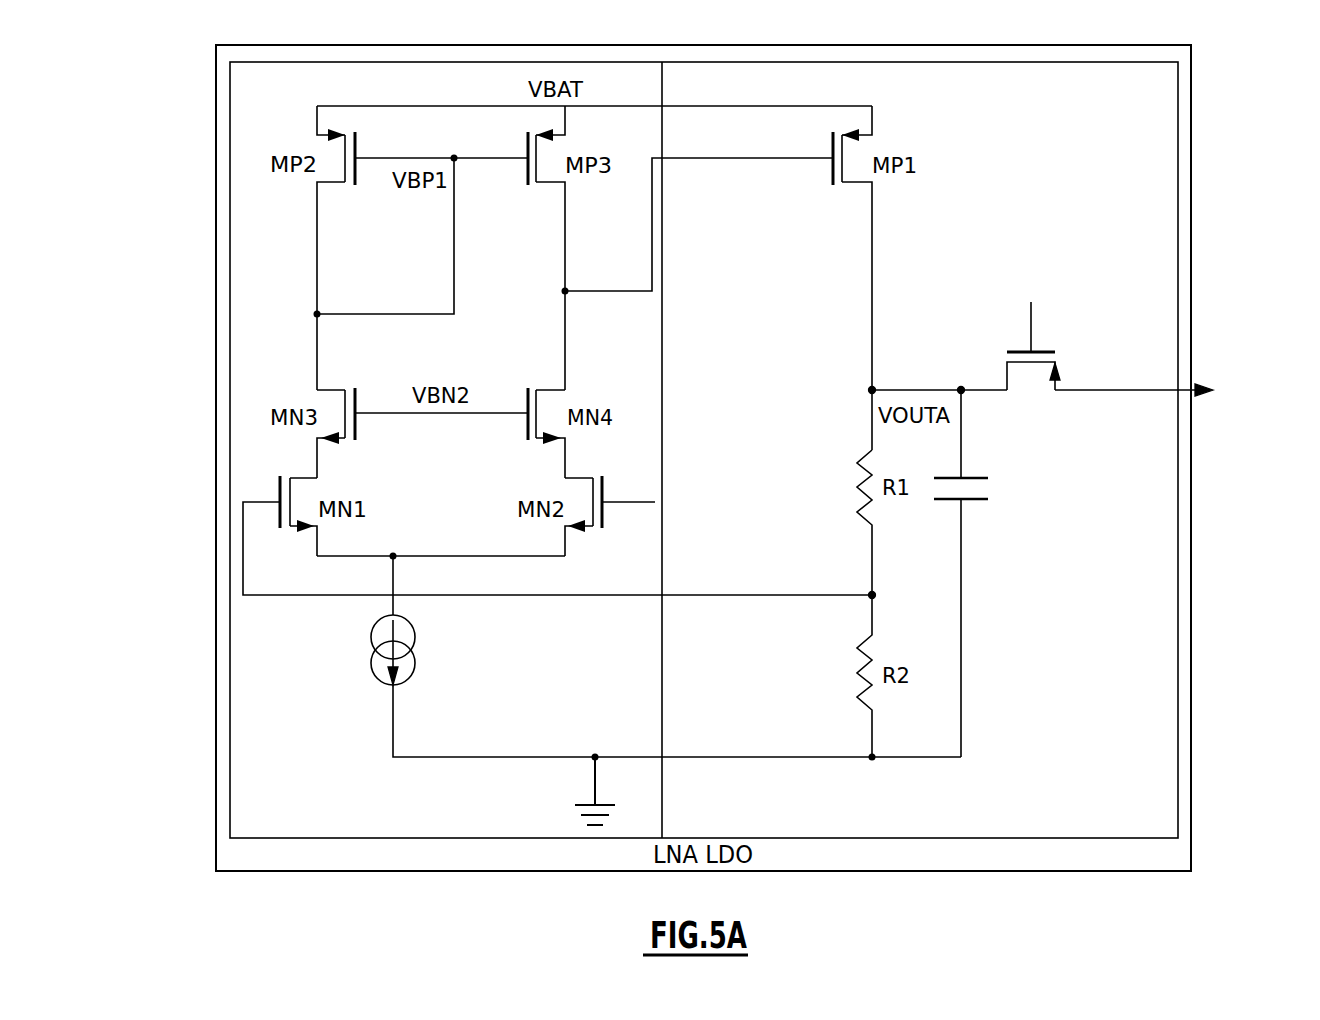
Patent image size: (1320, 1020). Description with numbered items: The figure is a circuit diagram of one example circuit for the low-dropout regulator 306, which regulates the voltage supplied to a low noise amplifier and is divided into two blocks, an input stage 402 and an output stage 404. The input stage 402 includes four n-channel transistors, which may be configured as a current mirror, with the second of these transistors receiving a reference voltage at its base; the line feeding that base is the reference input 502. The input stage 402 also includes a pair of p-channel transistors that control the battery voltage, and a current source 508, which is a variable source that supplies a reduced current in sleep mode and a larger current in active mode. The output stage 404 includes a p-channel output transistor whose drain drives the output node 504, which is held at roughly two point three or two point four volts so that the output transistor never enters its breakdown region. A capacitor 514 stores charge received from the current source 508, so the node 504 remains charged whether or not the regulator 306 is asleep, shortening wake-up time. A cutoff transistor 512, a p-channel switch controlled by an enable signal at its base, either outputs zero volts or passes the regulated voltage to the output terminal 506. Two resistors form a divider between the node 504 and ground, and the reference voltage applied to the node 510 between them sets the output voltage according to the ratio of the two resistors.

The low-dropout regulator 306 is at (216, 82).
The input stage 402 is at (217, 840).
The output stage 404 is at (1191, 840).
The feedback input to MN2 gate 502 is at (640, 502).
The output node 504 is at (872, 390).
The VOUT output 506 is at (1198, 390).
The current source 508 is at (420, 663).
The node 510 is at (872, 595).
The cutoff transistor 512 is at (1050, 352).
The capacitor 514 is at (973, 478).